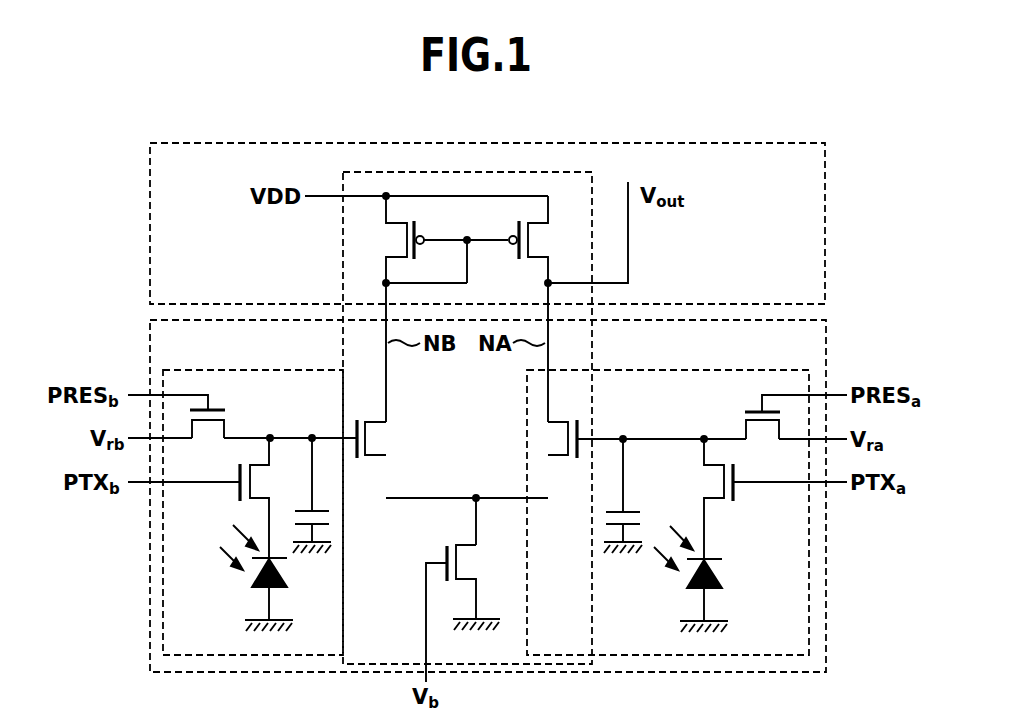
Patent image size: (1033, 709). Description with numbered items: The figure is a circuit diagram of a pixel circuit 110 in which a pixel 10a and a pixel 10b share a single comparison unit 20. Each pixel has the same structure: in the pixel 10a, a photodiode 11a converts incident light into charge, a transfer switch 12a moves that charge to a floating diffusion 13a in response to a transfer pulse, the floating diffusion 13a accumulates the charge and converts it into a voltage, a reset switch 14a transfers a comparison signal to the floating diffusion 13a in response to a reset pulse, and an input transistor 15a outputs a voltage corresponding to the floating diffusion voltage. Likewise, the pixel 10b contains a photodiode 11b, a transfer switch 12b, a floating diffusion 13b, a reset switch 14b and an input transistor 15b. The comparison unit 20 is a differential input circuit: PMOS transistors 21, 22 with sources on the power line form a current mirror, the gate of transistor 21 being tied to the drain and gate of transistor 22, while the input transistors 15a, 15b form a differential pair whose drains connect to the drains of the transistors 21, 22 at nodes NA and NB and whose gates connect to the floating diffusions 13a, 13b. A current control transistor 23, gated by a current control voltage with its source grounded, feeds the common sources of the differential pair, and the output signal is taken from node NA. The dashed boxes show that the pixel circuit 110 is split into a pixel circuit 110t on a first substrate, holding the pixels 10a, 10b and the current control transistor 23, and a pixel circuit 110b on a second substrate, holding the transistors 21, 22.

The pixel circuit 110 is at (436, 407).
The pixel circuit 110b is at (149, 262).
The pixel circuit 110t is at (148, 343).
The comparison unit 20 is at (343, 264).
The transistor 21 is at (544, 237).
The transistor 22 is at (386, 240).
The current control transistor 23 is at (470, 564).
The pixel 10a is at (809, 571).
The pixel 10b is at (162, 596).
The photodiode 11a is at (720, 578).
The photodiode 11b is at (255, 589).
The transfer switch 12a is at (733, 494).
The transfer switch 12b is at (240, 496).
The floating diffusion 13a is at (640, 513).
The floating diffusion 13b is at (297, 517).
The reset switch 14a is at (746, 418).
The reset switch 14b is at (225, 418).
The input transistor 15a is at (570, 458).
The input transistor 15b is at (365, 458).